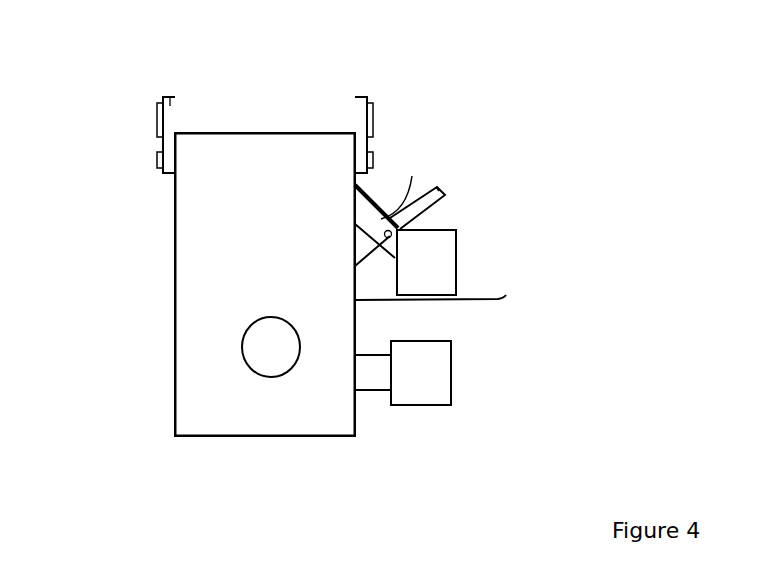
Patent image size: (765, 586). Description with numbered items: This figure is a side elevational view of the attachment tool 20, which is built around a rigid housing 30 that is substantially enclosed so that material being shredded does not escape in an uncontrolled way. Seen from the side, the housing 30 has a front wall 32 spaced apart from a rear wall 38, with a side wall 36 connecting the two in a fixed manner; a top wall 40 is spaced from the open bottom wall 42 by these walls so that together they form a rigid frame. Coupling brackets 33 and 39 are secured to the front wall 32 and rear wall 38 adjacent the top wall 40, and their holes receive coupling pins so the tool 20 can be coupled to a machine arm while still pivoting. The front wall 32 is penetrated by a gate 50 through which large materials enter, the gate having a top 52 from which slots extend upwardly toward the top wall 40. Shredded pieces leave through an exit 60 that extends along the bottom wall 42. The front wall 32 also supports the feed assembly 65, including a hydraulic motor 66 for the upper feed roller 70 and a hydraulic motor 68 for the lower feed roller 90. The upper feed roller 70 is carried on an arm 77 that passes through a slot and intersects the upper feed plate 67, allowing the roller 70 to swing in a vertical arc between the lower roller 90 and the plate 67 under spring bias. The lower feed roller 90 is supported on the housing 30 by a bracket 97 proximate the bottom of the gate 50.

The attachment tool 20 is at (223, 20).
The housing 30 is at (252, 112).
The front wall 32 is at (357, 184).
The coupling bracket 33 is at (368, 106).
The side wall 36 is at (221, 395).
The rear wall 38 is at (175, 228).
The coupling bracket 39 is at (168, 101).
The top wall 40 is at (300, 131).
The bottom wall 42 is at (294, 438).
The gate 50 is at (359, 332).
The gate top 52 is at (443, 295).
The exit 60 is at (164, 424).
The feed assembly 65 is at (478, 318).
The hydraulic motor 66 is at (448, 229).
The upper feed plate 67 is at (443, 191).
The hydraulic motor 68 is at (422, 405).
The upper feed roller 70 is at (497, 236).
The arm 77 is at (410, 185).
The lower feed roller 90 is at (478, 358).
The bracket 97 is at (372, 391).